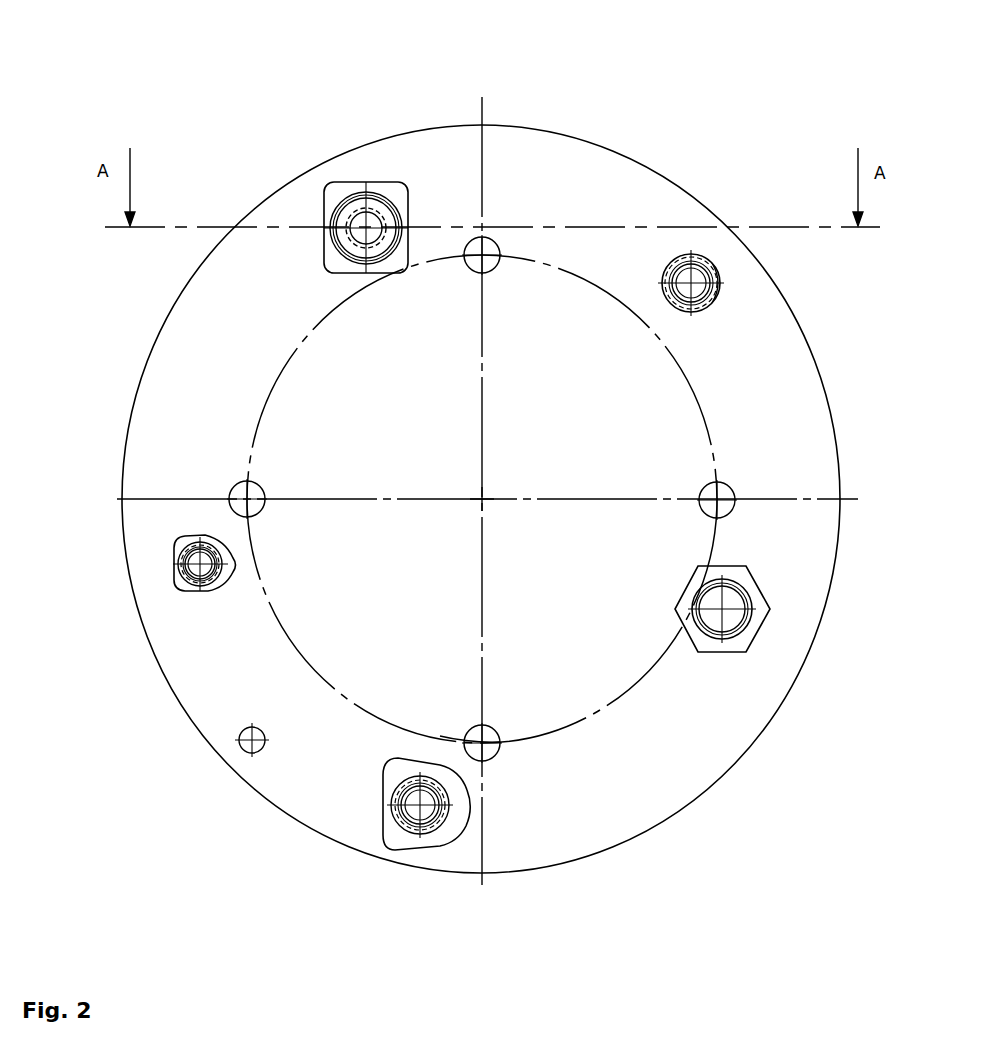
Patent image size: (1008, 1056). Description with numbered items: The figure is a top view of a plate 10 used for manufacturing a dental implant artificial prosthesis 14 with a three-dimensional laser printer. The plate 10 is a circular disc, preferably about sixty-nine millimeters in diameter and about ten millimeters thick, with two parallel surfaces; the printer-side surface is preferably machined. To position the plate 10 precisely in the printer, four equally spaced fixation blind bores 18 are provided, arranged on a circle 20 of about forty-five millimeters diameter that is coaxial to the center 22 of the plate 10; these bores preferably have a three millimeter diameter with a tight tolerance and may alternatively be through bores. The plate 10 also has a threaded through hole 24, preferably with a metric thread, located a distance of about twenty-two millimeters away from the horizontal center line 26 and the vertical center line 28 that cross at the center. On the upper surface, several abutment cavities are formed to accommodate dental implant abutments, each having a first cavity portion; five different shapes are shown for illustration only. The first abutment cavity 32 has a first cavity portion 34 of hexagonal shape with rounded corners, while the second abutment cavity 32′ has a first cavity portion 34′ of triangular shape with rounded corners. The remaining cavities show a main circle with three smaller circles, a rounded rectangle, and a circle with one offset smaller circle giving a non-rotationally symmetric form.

The plate 10 is at (604, 104).
The dental implant artificial prosthesis 14 is at (237, 496).
The fixation blind bores 18 is at (494, 240).
The circle 20 is at (483, 622).
The center 22 is at (482, 500).
The threaded through hole 24 is at (241, 749).
The horizontal center line 26 is at (353, 499).
The vertical center line 28 is at (500, 748).
The first abutment cavity 32 is at (736, 673).
The second abutment cavity 32′ is at (442, 842).
The first cavity portion 34 is at (757, 628).
The first cavity portion 34′ is at (402, 852).